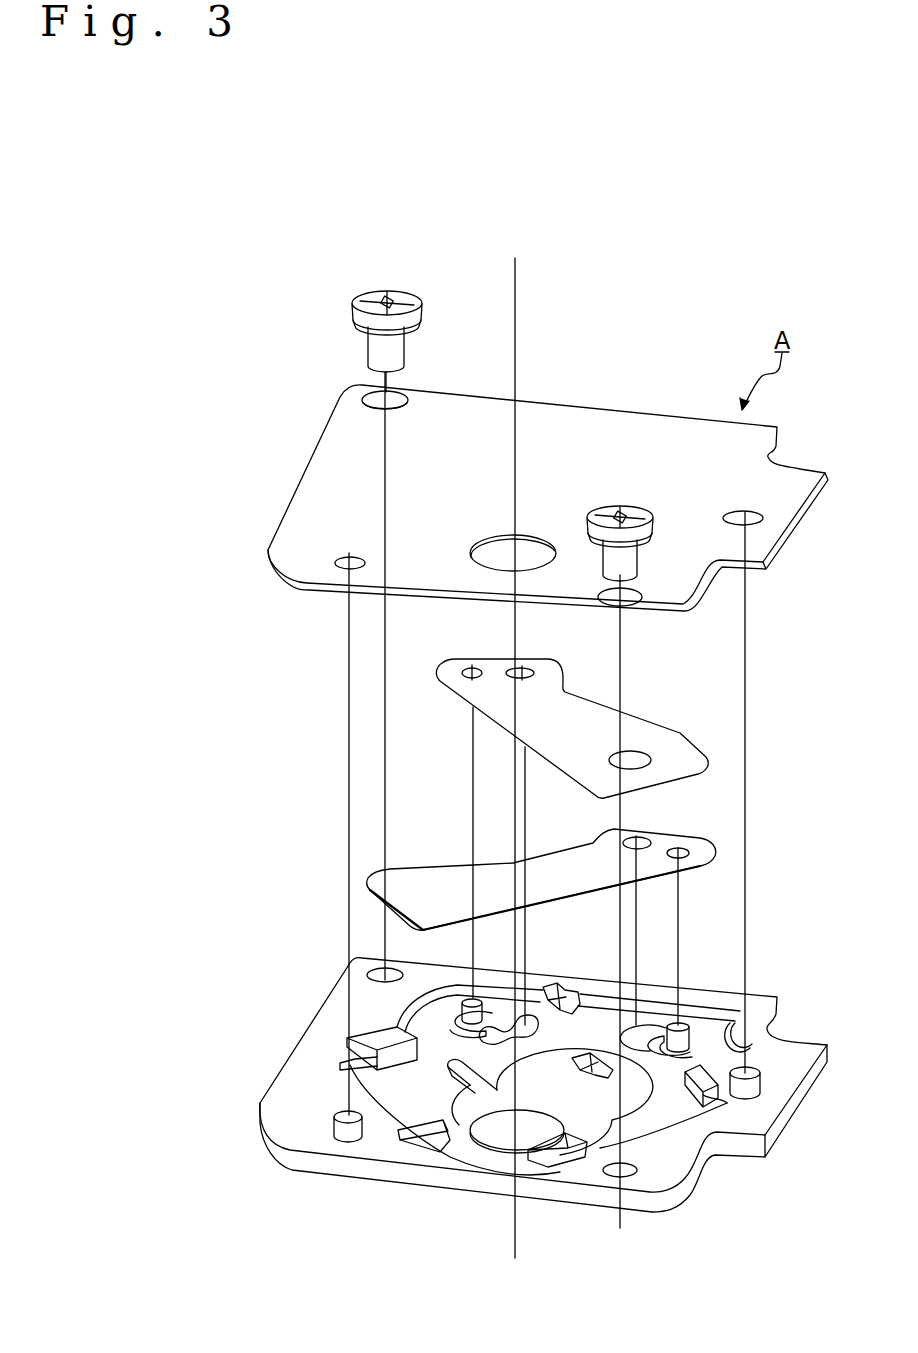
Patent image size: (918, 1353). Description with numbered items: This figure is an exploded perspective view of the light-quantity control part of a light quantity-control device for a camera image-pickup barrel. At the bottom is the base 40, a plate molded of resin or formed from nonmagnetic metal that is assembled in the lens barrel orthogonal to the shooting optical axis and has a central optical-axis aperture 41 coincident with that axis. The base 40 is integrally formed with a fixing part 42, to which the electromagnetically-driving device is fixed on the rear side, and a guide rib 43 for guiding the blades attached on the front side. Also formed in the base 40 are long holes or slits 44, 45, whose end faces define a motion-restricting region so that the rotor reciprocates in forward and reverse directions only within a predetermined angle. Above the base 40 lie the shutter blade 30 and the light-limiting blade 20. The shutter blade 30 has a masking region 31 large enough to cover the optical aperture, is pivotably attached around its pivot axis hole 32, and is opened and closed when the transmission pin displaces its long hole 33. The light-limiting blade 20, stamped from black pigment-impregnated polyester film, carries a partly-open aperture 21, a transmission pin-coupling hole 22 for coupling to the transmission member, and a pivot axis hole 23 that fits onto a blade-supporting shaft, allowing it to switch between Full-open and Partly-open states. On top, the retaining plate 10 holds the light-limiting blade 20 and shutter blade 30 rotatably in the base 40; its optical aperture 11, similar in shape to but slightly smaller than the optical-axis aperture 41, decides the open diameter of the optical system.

The retaining plate 10 is at (548, 474).
The optical aperture 11 is at (488, 535).
The light-limiting blade 20 is at (601, 707).
The partly-open aperture 21 is at (632, 757).
The transmission pin-coupling hole 22 is at (521, 671).
The pivot axis hole 23 is at (467, 671).
The shutter blade 30 is at (585, 860).
The masking region 31 is at (423, 895).
The pivot axis hole 32 is at (681, 851).
The long hole (transmission pin-coupling hole) 33 is at (640, 842).
The base 40 is at (543, 1084).
The optical-axis aperture 41 is at (488, 1135).
The fixing part 42 is at (560, 980).
The guide rib 43 is at (450, 1110).
The long hole (slit) 44 is at (517, 1040).
The long hole (slit) 45 is at (650, 1047).